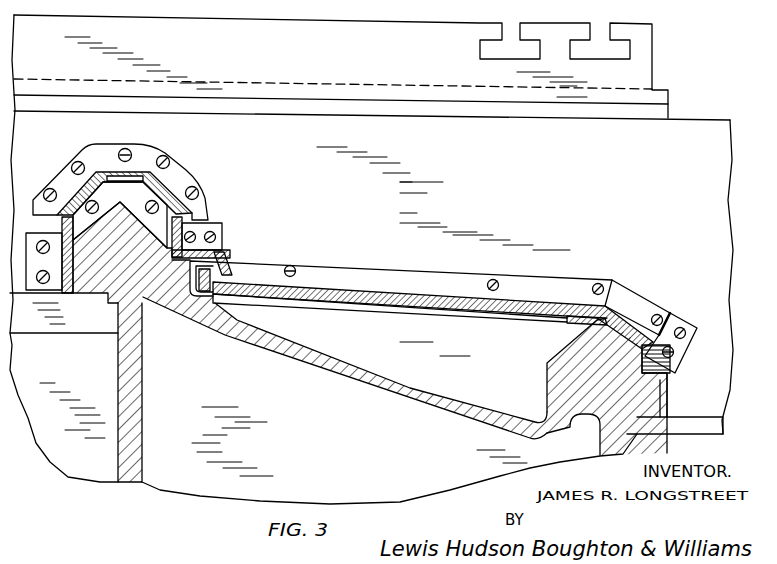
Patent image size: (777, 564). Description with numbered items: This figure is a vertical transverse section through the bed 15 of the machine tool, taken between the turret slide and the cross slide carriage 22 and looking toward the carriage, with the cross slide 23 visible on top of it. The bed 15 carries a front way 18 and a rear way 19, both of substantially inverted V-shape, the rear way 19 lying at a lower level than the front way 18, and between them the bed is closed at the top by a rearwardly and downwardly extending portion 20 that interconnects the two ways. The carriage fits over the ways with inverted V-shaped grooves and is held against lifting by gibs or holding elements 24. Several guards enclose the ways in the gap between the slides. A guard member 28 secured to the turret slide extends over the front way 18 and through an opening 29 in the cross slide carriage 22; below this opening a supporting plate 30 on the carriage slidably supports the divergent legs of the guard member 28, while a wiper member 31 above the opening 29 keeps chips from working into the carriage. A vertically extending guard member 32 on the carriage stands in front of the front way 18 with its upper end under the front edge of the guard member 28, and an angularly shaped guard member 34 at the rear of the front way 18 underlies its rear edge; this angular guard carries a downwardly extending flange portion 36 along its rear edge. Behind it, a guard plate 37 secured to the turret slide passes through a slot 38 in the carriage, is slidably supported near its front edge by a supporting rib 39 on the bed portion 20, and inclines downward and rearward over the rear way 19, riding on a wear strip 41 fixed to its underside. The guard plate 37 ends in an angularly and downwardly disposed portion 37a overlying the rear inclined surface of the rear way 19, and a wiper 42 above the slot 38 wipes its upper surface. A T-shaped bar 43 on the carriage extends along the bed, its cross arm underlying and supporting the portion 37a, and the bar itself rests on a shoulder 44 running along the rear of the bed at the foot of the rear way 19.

The bed 15 is at (134, 431).
The front way 18 is at (103, 287).
The rear way 19 is at (592, 388).
The rearwardly and downwardly extending portion 20 is at (355, 372).
The cross slide carriage 22 is at (543, 173).
The cross slide 23 is at (340, 33).
The gibs or holding elements 24 is at (42, 322).
The guard member 28 is at (86, 157).
The opening 29 is at (70, 190).
The supporting plate 30 is at (182, 186).
The wiper member 31 is at (137, 152).
The vertically extending guard member 32 is at (62, 234).
The angularly shaped guard member 34 is at (222, 245).
The downwardly extending flange portion 36 is at (233, 267).
The guard plate 37 is at (455, 305).
The angularly and downwardly disposed portion 37a is at (655, 308).
The slot 38 is at (415, 295).
The supporting rib 39 is at (229, 308).
The wear strip 41 is at (567, 321).
The wiper 42 is at (582, 290).
The T-shaped bar 43 is at (668, 372).
The shoulder 44 is at (656, 384).